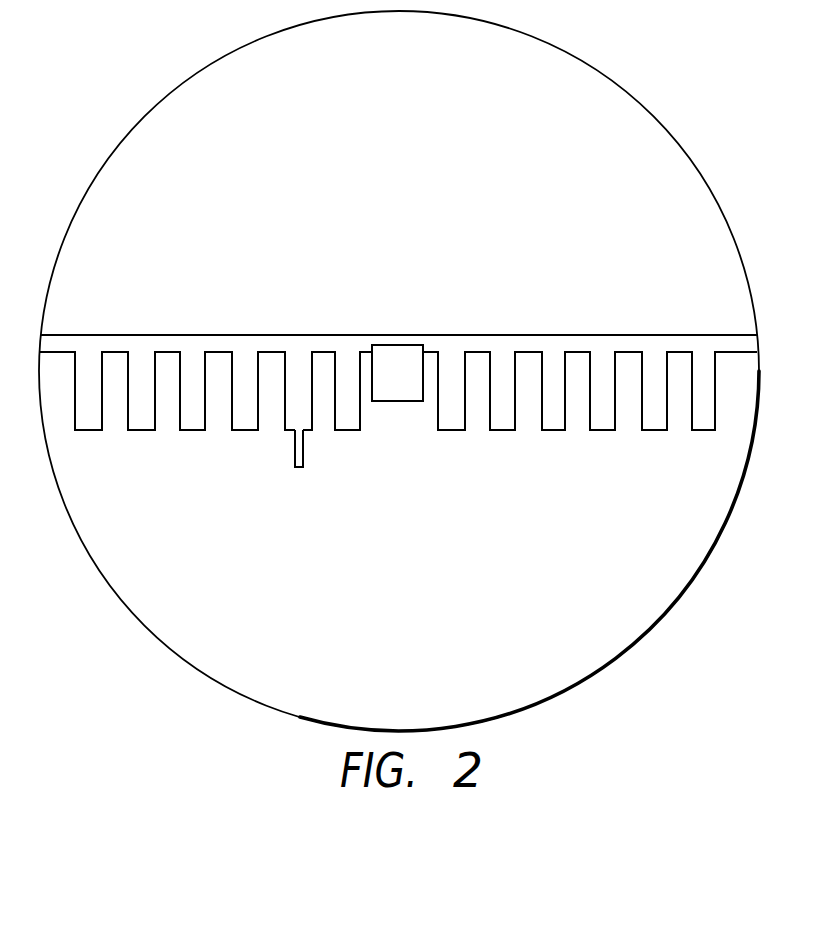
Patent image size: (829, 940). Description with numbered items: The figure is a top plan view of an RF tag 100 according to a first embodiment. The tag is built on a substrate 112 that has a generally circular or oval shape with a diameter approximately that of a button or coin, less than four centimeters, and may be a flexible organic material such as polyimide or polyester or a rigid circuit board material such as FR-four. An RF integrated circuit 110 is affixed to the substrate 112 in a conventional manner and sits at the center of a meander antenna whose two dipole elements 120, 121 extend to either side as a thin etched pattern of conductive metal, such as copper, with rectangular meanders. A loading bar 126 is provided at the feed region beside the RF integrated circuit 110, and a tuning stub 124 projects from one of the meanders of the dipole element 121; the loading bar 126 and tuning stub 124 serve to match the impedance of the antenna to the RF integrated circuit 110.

The RF tag 100 is at (113, 98).
The substrate 112 is at (688, 593).
The dipole element 121 is at (215, 352).
The dipole element 120 is at (555, 430).
The tuning stub 124 is at (299, 467).
The loading bar 126 is at (397, 335).
The RF integrated circuit 110 is at (397, 401).